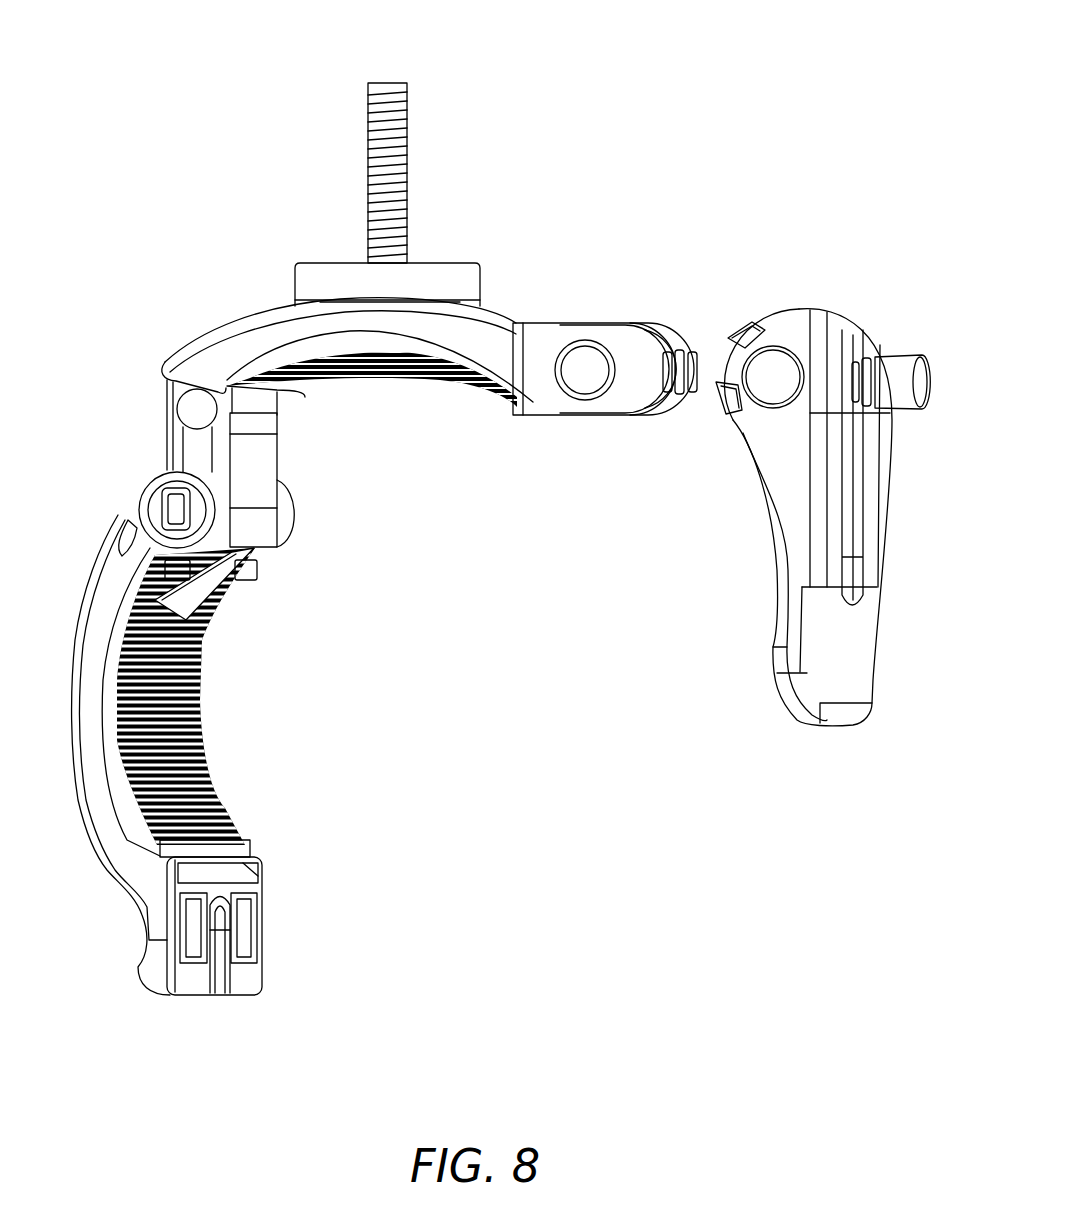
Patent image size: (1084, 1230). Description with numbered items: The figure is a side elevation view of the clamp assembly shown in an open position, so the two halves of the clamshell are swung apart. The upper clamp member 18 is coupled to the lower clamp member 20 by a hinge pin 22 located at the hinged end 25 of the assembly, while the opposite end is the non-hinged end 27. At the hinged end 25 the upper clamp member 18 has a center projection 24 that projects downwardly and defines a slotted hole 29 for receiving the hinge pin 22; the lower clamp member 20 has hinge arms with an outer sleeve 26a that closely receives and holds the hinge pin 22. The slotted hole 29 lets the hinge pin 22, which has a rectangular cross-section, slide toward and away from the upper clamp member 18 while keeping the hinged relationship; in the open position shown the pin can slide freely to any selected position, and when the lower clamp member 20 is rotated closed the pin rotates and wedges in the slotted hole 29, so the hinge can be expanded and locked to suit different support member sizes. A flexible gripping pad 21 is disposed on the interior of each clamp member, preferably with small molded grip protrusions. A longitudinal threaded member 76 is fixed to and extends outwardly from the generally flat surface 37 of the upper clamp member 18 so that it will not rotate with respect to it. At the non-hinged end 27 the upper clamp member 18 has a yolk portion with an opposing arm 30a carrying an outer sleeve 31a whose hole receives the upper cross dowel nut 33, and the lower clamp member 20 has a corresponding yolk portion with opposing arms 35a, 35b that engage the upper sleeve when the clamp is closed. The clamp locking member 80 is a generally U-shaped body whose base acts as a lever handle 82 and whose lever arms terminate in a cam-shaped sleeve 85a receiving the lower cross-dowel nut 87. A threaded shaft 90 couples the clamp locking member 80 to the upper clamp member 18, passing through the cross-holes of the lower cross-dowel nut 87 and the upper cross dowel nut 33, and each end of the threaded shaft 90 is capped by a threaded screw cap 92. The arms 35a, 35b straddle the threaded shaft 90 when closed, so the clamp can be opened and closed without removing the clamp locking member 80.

The upper clamp member 18 is at (486, 332).
The lower clamp member 20 is at (97, 850).
The flexible gripping pad 21 is at (438, 365).
The hinge pin 22 is at (170, 505).
The center projection 24 is at (262, 465).
The hinged end 25 is at (140, 291).
The outer sleeve 26a is at (182, 395).
The non-hinged end 27 is at (708, 263).
The slotted hole 29 is at (270, 435).
The opposing arm 30a is at (560, 340).
The outer sleeve 31a is at (598, 330).
The upper cross dowel nut 33 is at (585, 378).
The opposing arm 35a is at (138, 930).
The opposing arm 35b is at (205, 985).
The generally flat surface 37 is at (322, 265).
The longitudinal threaded member 76 is at (403, 118).
The clamp locking member 80 is at (882, 476).
The lever handle 82 is at (778, 665).
The cam-shaped sleeve 85a is at (735, 403).
The lower cross-dowel nut 87 is at (778, 362).
The threaded shaft 90 is at (684, 395).
The threaded screw cap 92 is at (908, 397).